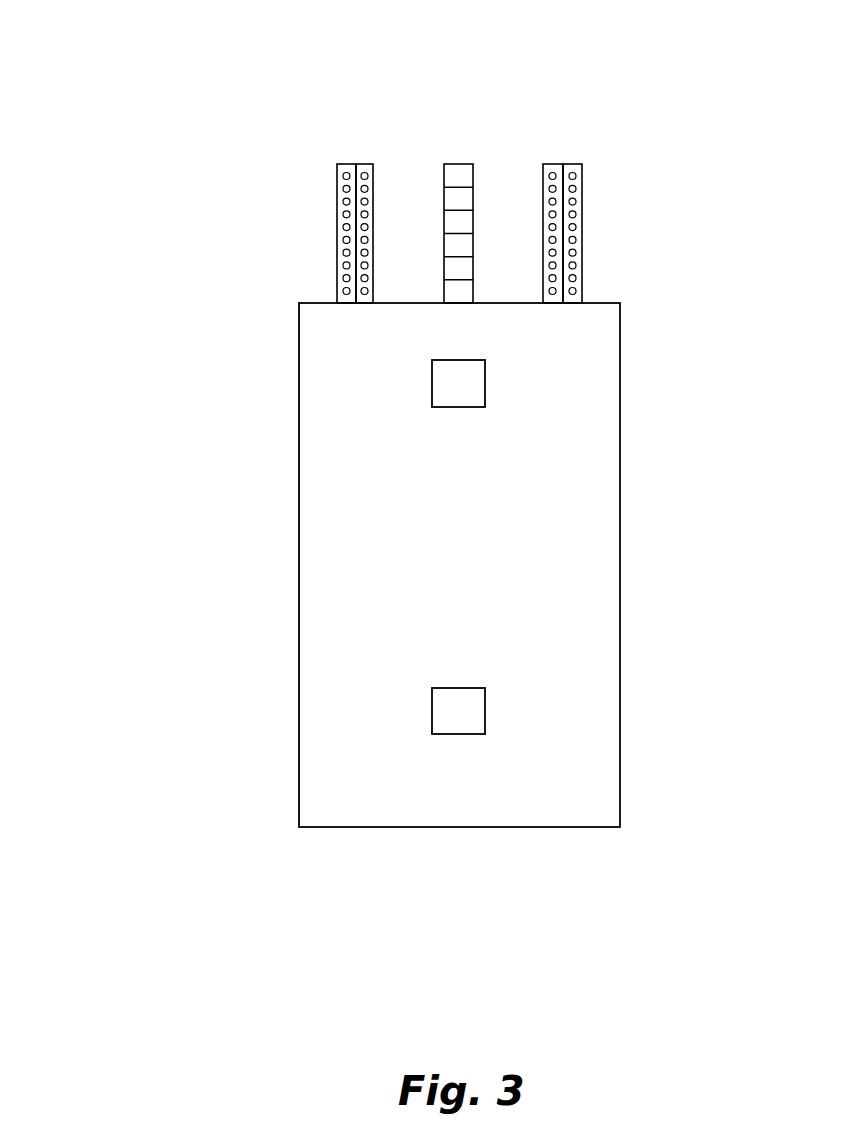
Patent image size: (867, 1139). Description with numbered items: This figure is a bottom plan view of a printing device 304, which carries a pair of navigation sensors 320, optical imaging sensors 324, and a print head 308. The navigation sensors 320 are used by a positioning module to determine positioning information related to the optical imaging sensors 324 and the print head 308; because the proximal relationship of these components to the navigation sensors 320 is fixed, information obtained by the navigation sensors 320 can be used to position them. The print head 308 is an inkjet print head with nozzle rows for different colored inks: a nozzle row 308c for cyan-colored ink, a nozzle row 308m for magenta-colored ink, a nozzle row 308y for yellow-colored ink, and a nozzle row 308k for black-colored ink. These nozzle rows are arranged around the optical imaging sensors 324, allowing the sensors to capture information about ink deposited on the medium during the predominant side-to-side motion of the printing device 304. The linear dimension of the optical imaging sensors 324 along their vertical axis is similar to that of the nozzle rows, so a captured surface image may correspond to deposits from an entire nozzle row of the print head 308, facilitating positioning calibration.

The printing device 304 is at (138, 56).
The print head 308 is at (488, 178).
The nozzle row for cyan-colored ink 308c is at (337, 163).
The nozzle row for magenta-colored ink 308m is at (363, 163).
The nozzle row for yellow-colored ink 308y is at (553, 163).
The nozzle row for black-colored ink 308k is at (582, 163).
The optical imaging sensors 324 is at (458, 163).
The navigation sensors 320 is at (432, 384).